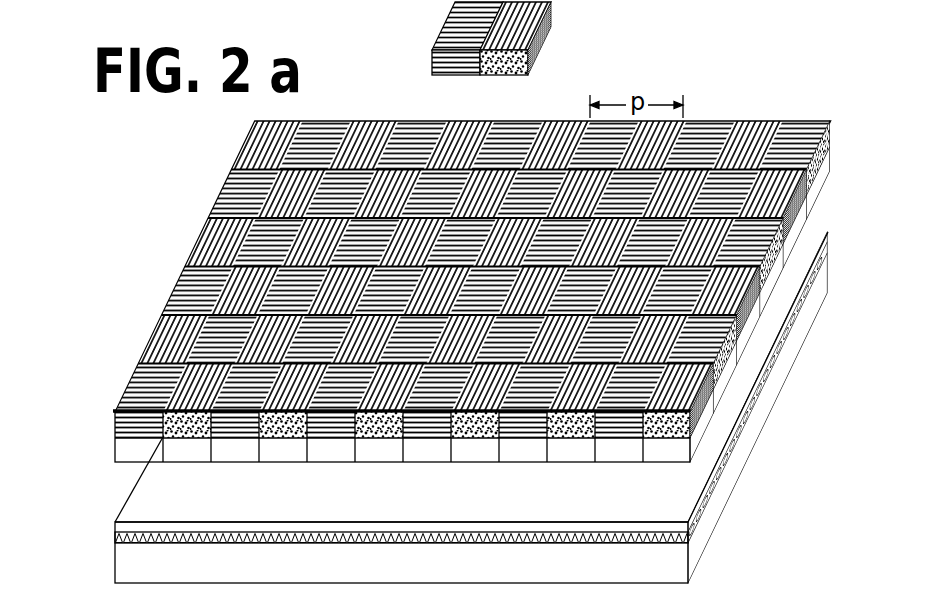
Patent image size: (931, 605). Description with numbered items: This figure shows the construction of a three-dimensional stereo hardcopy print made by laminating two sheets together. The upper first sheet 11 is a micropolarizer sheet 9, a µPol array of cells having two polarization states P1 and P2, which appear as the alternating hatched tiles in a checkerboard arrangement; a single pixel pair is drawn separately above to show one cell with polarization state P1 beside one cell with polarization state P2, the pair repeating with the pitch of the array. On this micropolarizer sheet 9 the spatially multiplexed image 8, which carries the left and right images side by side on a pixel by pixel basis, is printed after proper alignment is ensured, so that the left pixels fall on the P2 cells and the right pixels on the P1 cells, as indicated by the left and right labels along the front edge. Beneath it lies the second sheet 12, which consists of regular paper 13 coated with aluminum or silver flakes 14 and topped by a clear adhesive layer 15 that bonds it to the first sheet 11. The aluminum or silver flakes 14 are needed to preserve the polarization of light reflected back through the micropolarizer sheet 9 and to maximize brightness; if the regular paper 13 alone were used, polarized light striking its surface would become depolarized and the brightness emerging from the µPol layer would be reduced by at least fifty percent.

The spatially multiplexed image 8 is at (115, 455).
The micropolarizer sheet 9 is at (178, 270).
The first sheet 11 is at (839, 146).
The second sheet 12 is at (98, 548).
The regular paper 13 is at (206, 570).
The aluminum or silver flakes 14 is at (690, 537).
The clear adhesive layer 15 is at (223, 501).
The polarization state P1 is at (456, 38).
The polarization state P2 is at (543, 38).